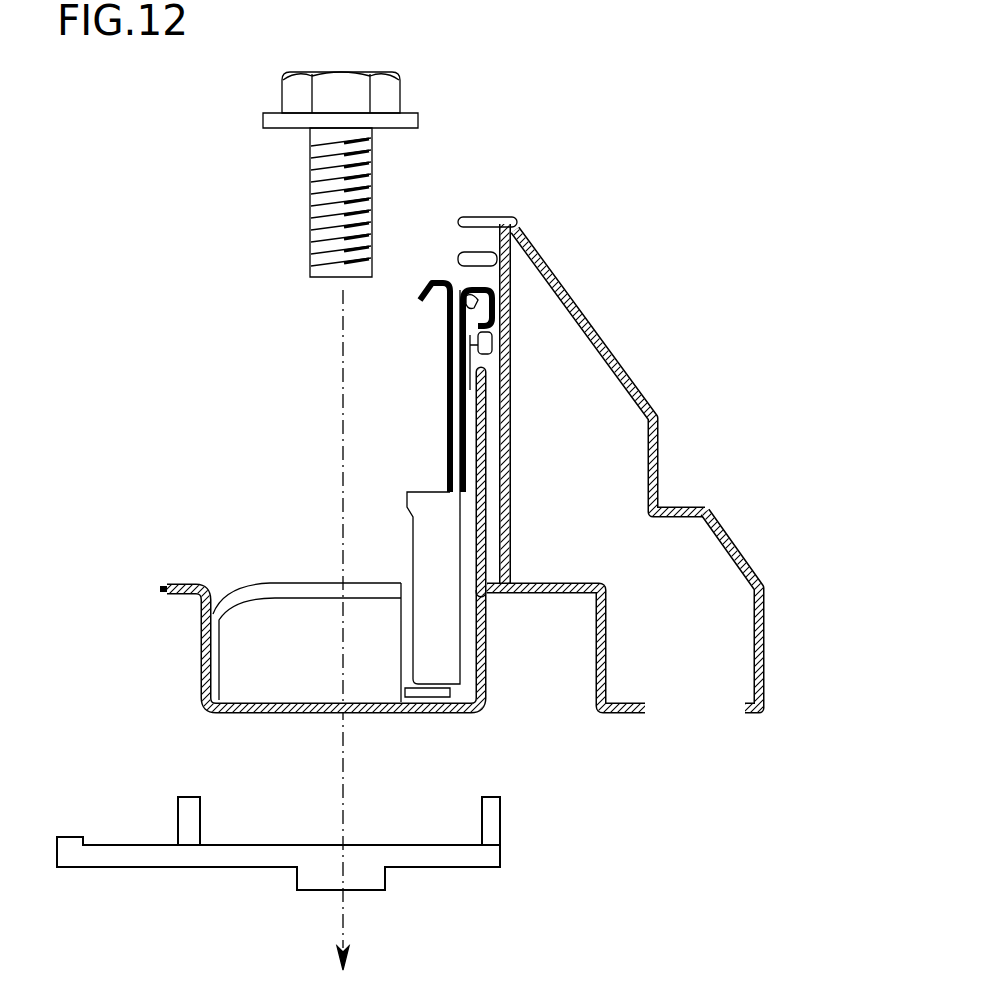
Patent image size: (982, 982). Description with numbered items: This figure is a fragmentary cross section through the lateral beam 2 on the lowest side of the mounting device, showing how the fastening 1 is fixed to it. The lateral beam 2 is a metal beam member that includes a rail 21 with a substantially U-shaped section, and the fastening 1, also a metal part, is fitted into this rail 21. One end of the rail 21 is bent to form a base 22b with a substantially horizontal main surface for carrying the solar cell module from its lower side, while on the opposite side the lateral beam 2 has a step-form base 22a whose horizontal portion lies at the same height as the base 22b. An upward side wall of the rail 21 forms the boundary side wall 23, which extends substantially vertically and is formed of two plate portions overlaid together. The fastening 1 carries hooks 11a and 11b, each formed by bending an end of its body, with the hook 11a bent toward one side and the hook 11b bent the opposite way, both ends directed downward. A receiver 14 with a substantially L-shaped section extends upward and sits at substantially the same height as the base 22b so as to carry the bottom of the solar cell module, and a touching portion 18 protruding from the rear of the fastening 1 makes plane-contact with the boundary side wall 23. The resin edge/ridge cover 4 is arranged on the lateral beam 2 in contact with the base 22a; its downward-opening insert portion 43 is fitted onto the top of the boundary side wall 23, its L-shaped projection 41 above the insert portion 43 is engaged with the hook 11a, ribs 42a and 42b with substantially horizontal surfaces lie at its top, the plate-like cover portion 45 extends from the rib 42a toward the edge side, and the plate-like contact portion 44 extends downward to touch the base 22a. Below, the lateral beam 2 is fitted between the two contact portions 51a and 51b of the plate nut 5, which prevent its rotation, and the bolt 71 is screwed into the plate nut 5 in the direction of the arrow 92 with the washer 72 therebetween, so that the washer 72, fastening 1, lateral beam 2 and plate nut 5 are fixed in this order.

The fastening 1 is at (402, 457).
The lateral beam 2 is at (402, 565).
The edge/ridge cover 4 is at (659, 437).
The plate nut 5 is at (309, 866).
The hook 11a is at (478, 270).
The hook 11b is at (428, 268).
The receiver 14 is at (293, 583).
The touching portion 18 is at (467, 630).
The rail 21 is at (250, 706).
The base 22a is at (575, 580).
The base 22b is at (160, 590).
The boundary side wall 23 is at (490, 458).
The L-shaped projection 41 is at (470, 300).
The rib 42a is at (512, 218).
The rib 42b is at (490, 255).
The insert portion 43 is at (482, 345).
The contact portion 44 is at (505, 507).
The cover portion 45 is at (608, 372).
The contact portion 51a is at (495, 815).
The contact portion 51b is at (190, 820).
The bolt 71 is at (296, 93).
The washer 72 is at (268, 122).
The arrow 92 is at (335, 410).